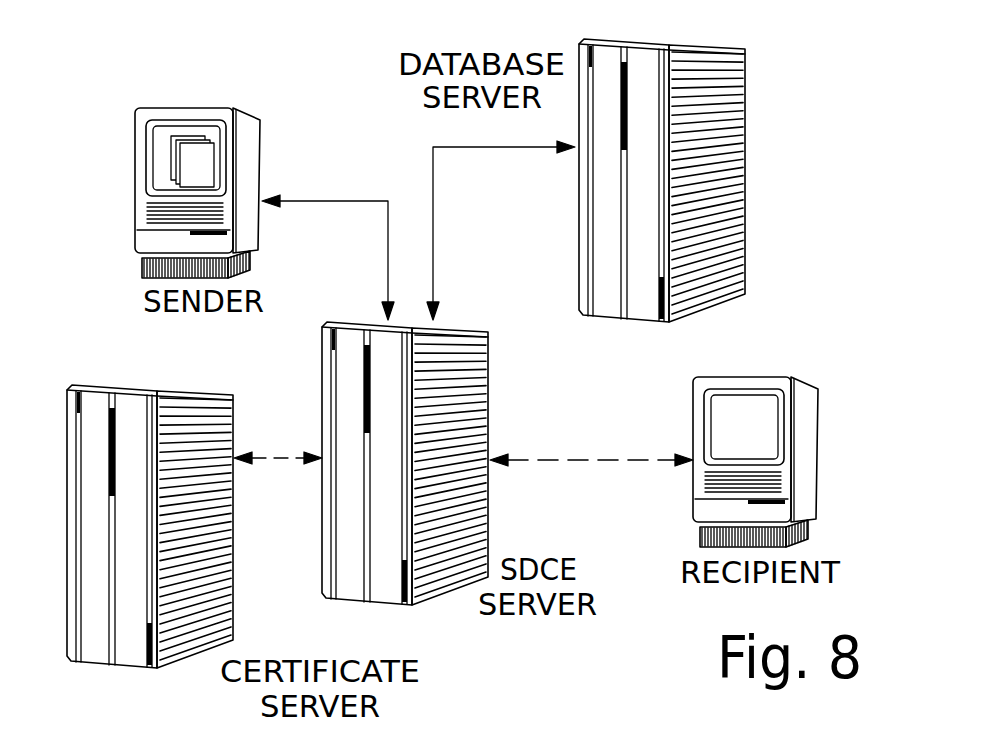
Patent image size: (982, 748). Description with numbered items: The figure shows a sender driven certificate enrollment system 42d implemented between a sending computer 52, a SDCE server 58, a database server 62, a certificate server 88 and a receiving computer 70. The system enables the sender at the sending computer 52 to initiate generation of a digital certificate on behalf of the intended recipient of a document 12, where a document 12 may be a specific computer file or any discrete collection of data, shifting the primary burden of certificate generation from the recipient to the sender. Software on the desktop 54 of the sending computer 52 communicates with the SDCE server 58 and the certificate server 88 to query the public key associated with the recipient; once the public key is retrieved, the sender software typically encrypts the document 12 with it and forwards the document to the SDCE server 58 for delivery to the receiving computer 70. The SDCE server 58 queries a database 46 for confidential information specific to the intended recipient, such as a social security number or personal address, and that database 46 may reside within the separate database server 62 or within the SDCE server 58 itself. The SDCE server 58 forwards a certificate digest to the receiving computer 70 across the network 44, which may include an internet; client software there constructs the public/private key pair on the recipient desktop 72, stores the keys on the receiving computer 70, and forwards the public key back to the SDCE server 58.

The document 12 is at (145, 161).
The certificate enrollment system 42d is at (797, 98).
The network 44 is at (563, 461).
The database 46 is at (496, 410).
The sending computer 52 is at (168, 155).
The desktop 54 is at (151, 114).
The SDCE server 58 is at (444, 439).
The database server 62 is at (742, 47).
The receiving computer 70 is at (788, 430).
The recipient desktop 72 is at (793, 420).
The certificate server 88 is at (230, 390).